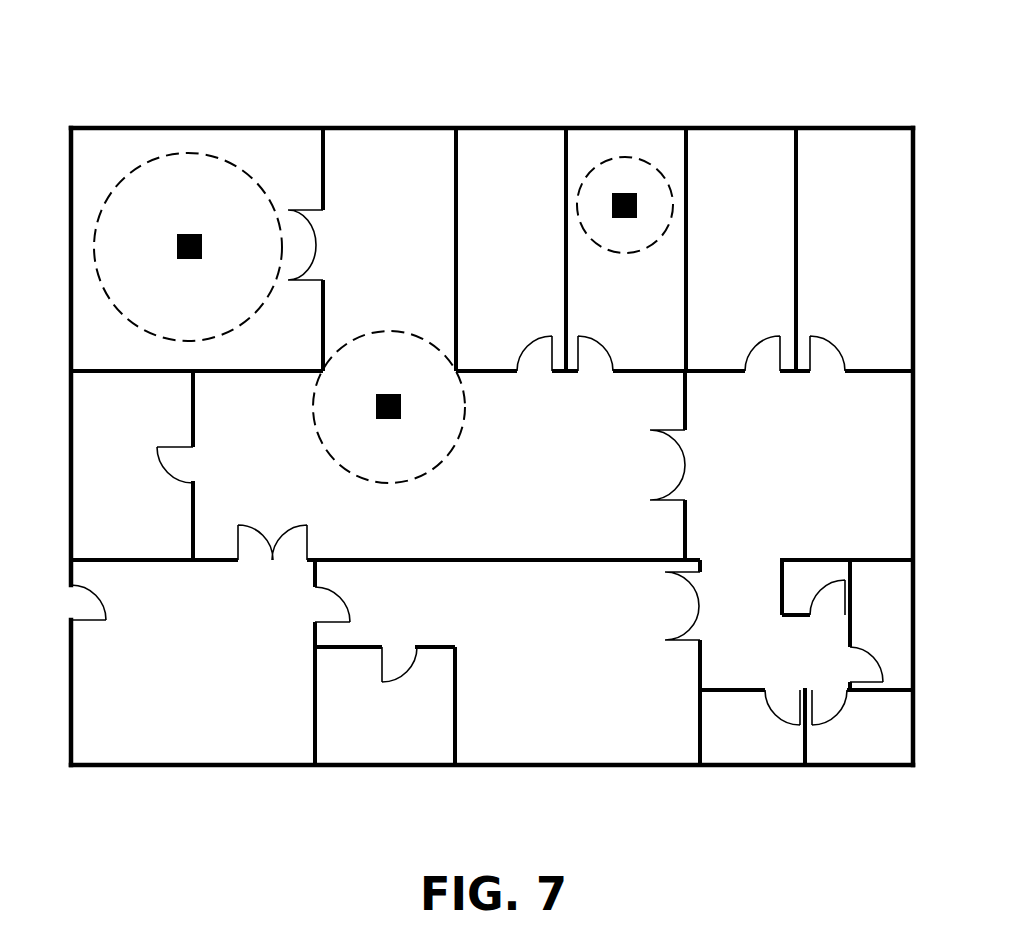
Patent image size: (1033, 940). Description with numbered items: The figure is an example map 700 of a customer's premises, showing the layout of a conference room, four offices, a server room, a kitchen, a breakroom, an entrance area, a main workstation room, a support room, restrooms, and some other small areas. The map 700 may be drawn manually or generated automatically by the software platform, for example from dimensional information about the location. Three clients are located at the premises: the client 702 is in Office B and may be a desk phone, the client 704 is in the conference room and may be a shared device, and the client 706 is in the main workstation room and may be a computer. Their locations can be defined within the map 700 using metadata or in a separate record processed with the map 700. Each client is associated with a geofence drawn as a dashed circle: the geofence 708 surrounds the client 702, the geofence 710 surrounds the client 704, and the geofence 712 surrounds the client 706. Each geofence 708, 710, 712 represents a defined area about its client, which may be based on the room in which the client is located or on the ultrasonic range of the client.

The map 700 is at (36, 101).
The client 702 is at (637, 205).
The client 704 is at (202, 245).
The client 706 is at (401, 406).
The geofence 708 is at (625, 157).
The geofence 710 is at (207, 155).
The geofence 712 is at (325, 445).